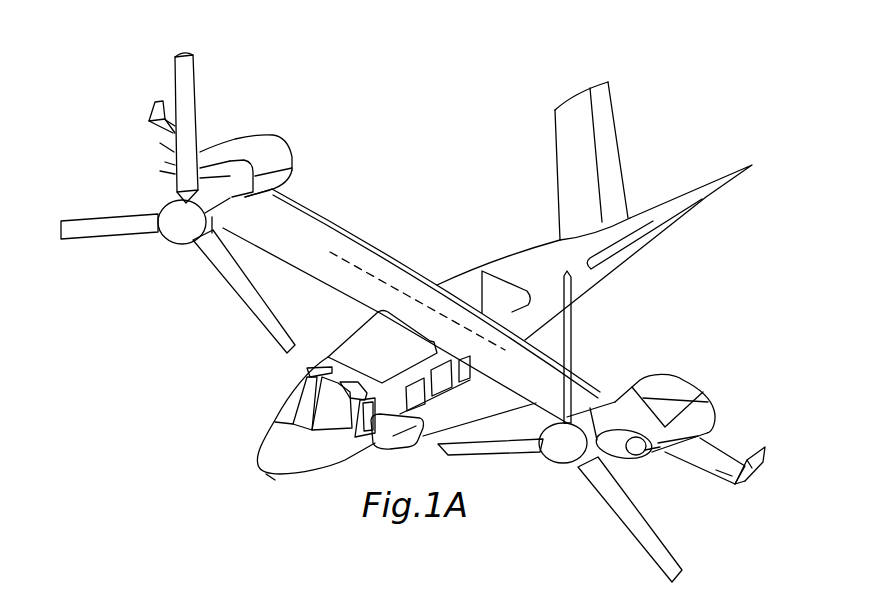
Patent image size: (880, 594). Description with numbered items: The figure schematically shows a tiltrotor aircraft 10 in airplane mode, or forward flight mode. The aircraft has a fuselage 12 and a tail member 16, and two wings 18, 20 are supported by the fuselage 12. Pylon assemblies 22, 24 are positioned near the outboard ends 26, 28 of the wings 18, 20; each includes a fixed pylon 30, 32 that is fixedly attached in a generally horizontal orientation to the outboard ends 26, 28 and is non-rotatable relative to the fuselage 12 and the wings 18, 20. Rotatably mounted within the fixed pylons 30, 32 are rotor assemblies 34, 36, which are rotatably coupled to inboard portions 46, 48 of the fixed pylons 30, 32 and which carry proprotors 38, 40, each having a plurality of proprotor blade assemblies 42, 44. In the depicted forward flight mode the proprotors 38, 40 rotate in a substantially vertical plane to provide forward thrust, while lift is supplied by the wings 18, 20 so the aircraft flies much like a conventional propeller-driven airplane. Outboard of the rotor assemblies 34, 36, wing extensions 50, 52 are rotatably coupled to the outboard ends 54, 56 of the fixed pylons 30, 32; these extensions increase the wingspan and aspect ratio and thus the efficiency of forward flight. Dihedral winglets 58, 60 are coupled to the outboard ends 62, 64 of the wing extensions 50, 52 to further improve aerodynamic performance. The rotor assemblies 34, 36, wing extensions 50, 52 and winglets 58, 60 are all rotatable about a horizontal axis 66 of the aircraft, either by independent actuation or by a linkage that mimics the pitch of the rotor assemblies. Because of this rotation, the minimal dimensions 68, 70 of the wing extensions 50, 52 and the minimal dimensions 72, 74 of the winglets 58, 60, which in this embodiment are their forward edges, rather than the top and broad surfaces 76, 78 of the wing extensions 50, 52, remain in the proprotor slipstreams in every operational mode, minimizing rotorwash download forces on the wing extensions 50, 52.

The tiltrotor aircraft 10 is at (453, 233).
The fuselage 12 is at (530, 260).
The tail member 16 is at (612, 140).
The wing 18 is at (520, 382).
The wing 20 is at (323, 242).
The pylon assembly 22 is at (673, 376).
The pylon assembly 24 is at (253, 138).
The outboard end of wing 26 is at (600, 392).
The outboard end of wing 28 is at (243, 217).
The fixed pylon 30 is at (693, 390).
The fixed pylon 32 is at (285, 163).
The rotor assembly 34 is at (617, 392).
The rotor assembly 36 is at (203, 250).
The proprotor 38 is at (547, 457).
The proprotor 40 is at (163, 233).
The proprotor blade assembly 42 is at (627, 517).
The proprotor blade assembly 44 is at (188, 78).
The inboard portion of fixed pylon 46 is at (643, 396).
The inboard portion of fixed pylon 48 is at (282, 147).
The wing extension 50 is at (700, 463).
The wing extension 52 is at (170, 127).
The outboard end of fixed pylon 54 is at (653, 456).
The outboard end of fixed pylon 56 is at (228, 143).
The winglet 58 is at (767, 468).
The winglet 60 is at (153, 108).
The outboard end of wing extension 62 is at (742, 484).
The outboard end of wing extension 64 is at (167, 147).
The horizontal axis 66 is at (377, 277).
The minimal dimension of wing extension 68 is at (683, 464).
The minimal dimension of wing extension 70 is at (170, 167).
The minimal dimension of winglet 72 is at (741, 464).
The minimal dimension of winglet 74 is at (147, 123).
The top and broad surface of wing extension 76 is at (728, 473).
The top and broad surface of wing extension 78 is at (170, 160).